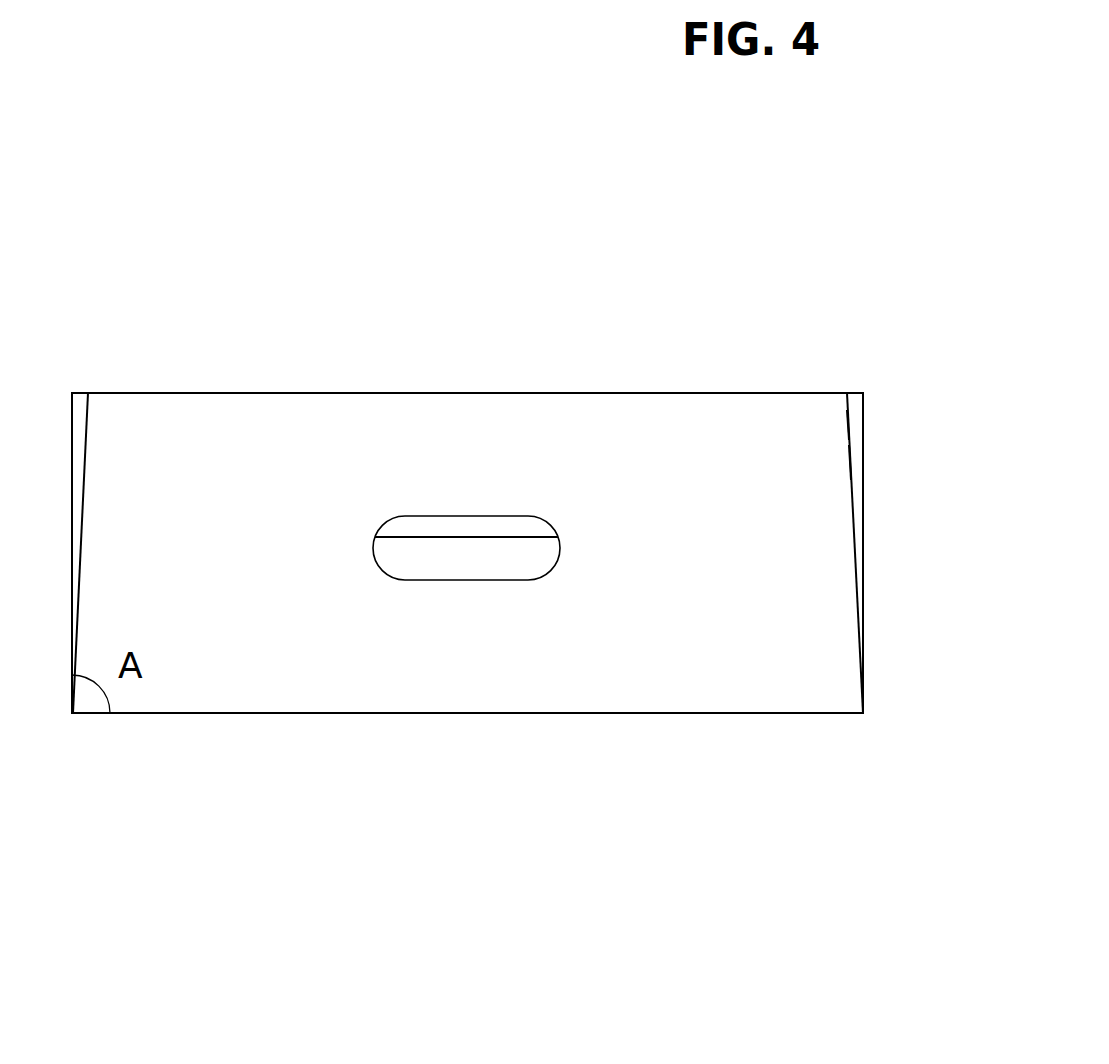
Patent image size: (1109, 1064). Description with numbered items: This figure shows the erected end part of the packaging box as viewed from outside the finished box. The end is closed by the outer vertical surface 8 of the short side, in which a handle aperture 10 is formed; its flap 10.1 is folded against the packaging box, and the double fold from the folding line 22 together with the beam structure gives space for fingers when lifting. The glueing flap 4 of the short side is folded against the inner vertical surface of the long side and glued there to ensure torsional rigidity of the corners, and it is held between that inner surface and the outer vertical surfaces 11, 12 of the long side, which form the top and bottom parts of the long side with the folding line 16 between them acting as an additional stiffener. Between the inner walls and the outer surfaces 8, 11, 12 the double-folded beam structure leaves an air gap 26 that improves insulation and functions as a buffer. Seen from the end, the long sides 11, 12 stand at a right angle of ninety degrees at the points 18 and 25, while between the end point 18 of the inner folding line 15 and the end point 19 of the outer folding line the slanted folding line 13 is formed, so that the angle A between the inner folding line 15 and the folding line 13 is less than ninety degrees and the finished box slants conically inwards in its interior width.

The glueing flap 4 is at (88, 452).
The outer vertical surface of the short side 8 is at (718, 620).
The handle aperture 10 is at (490, 562).
The flap 10.1 is at (446, 517).
The outer vertical surface of the long side 11 is at (849, 462).
The outer vertical surface of the long side 12 is at (868, 634).
The folding line 13 is at (88, 507).
The inner folding line 15 is at (375, 718).
The folding line 16 is at (870, 545).
The end point 18 is at (868, 716).
The end point 19 is at (847, 398).
The folding line 22 is at (525, 393).
The point 25 is at (862, 396).
The air gap 26 is at (847, 425).